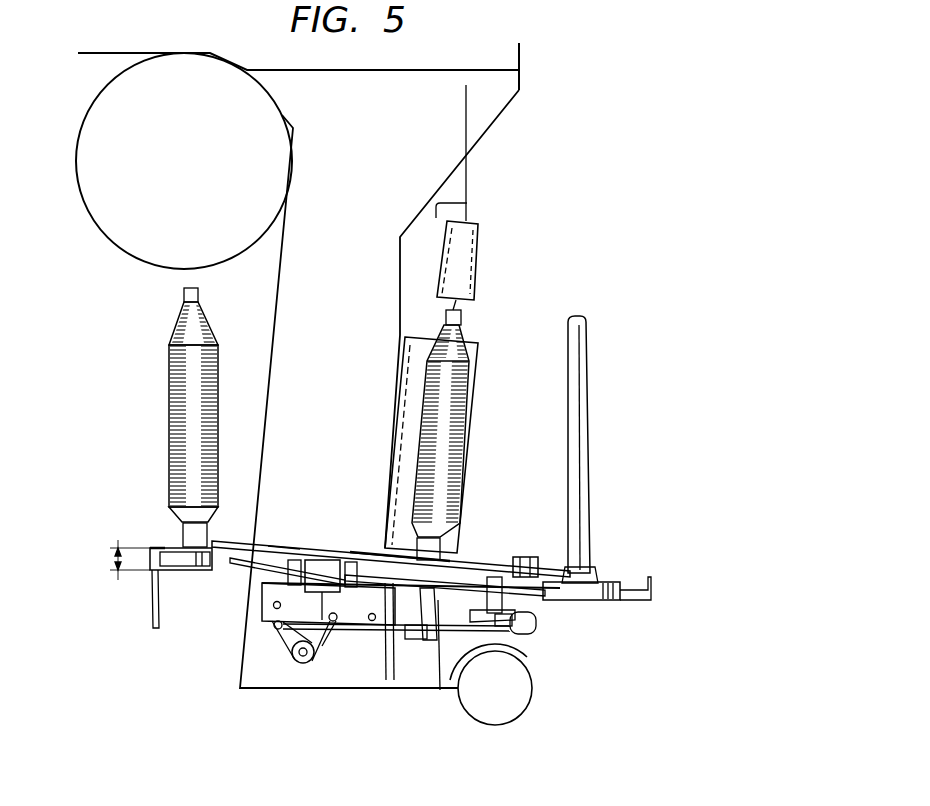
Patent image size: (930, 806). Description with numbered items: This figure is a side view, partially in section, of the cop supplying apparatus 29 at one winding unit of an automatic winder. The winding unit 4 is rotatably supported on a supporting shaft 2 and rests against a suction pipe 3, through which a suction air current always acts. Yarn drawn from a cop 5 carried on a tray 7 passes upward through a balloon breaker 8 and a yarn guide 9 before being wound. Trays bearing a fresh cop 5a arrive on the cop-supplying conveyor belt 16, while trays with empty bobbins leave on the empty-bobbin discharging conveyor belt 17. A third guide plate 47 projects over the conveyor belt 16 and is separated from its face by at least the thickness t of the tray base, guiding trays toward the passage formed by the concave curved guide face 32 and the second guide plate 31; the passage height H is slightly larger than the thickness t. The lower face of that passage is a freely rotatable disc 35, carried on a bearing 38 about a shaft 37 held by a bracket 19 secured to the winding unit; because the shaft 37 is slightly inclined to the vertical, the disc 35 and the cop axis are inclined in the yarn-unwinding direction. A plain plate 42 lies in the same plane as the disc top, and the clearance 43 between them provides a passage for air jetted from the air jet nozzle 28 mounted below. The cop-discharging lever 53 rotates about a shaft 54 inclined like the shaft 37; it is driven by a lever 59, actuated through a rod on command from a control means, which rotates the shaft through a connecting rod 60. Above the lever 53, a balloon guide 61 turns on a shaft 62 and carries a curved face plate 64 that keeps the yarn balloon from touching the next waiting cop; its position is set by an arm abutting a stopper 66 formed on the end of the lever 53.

The supporting shaft 2 is at (502, 710).
The suction pipe 3 is at (94, 197).
The winding unit 4 is at (490, 102).
The cop 5 is at (462, 440).
The cop formed at a spinning process 5a is at (187, 408).
The tray 7 is at (395, 659).
The balloon breaker 8 is at (463, 267).
The yarn guide 9 is at (466, 204).
The cop-supplying conveyor belt 16 is at (172, 572).
The empty-bobbin discharging conveyor belt 17 is at (628, 597).
The bracket 19 is at (267, 567).
The air jet nozzle 28 is at (423, 610).
The supplying apparatus 29 is at (341, 512).
The second guide plate 31 is at (268, 550).
The concave curved guide face 32 is at (255, 568).
The disc 35 is at (252, 572).
The shaft 37 is at (318, 632).
The bearing 38 is at (347, 607).
The plain plate 42 is at (503, 600).
The clearance 43 is at (440, 672).
The third guide plate 47 is at (165, 546).
The lever 53 is at (368, 548).
The shaft 54 is at (522, 635).
The lever 59 is at (290, 655).
The connecting rod 60 is at (360, 633).
The balloon guide 61 is at (480, 507).
The shaft 62 is at (540, 568).
The curved face plate 64 is at (415, 397).
The stopper 66 is at (521, 559).
The height H is at (284, 555).
The thickness t is at (122, 560).